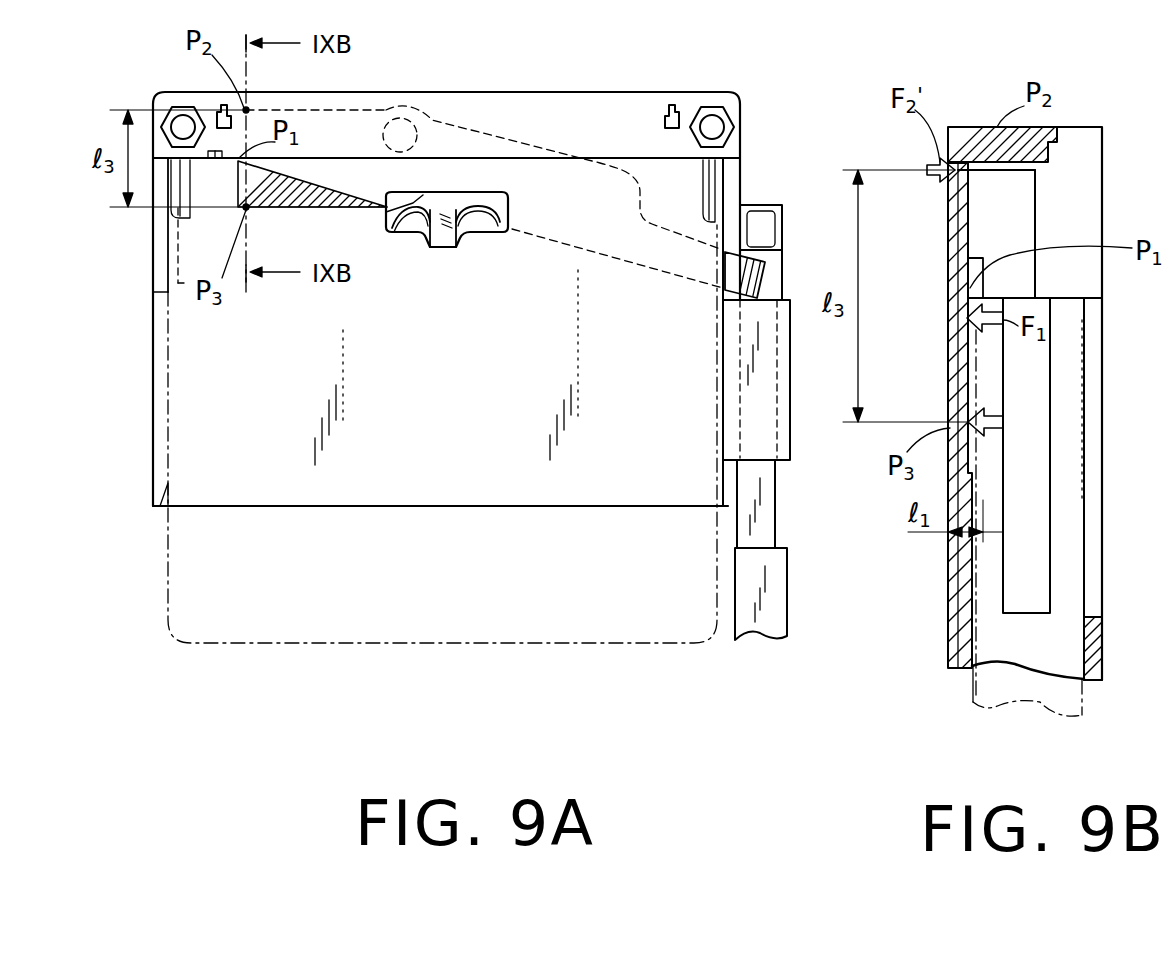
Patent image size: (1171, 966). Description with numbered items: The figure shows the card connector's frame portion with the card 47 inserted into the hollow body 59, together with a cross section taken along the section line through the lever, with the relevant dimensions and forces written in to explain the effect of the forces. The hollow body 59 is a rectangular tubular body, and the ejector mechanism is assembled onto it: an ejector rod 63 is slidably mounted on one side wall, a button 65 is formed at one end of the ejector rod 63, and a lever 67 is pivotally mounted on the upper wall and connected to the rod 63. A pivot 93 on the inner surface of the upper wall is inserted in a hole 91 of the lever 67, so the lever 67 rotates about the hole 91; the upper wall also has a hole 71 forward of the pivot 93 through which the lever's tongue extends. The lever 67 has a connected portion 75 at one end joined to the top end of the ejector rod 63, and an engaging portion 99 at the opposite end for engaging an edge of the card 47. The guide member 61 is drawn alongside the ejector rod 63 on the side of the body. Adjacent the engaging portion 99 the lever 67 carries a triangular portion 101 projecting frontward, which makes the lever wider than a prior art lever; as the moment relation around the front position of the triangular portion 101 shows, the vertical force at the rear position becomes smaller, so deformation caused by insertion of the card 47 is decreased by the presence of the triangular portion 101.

In FIG. 9A, the card 47 is at (625, 650).
In FIG. 9B, the card 47 is at (983, 705).
In FIG. 9A, the hollow body 59 is at (656, 92).
In FIG. 9B, the hollow body 59 is at (1024, 410).
In FIG. 9A, the guide member 61 is at (792, 398).
In FIG. 9A, the ejector rod 63 is at (777, 498).
In FIG. 9A, the button 65 is at (789, 585).
In FIG. 9A, the lever 67 is at (515, 138).
In FIG. 9A, the hole 71 is at (510, 207).
In FIG. 9A, the connected portion 75 is at (766, 272).
In FIG. 9A, the hole 91 is at (445, 122).
In FIG. 9A, the pivot 93 is at (392, 112).
In FIG. 9A, the engaging portion 99 is at (218, 160).
In FIG. 9A, the triangular portion 101 is at (290, 208).